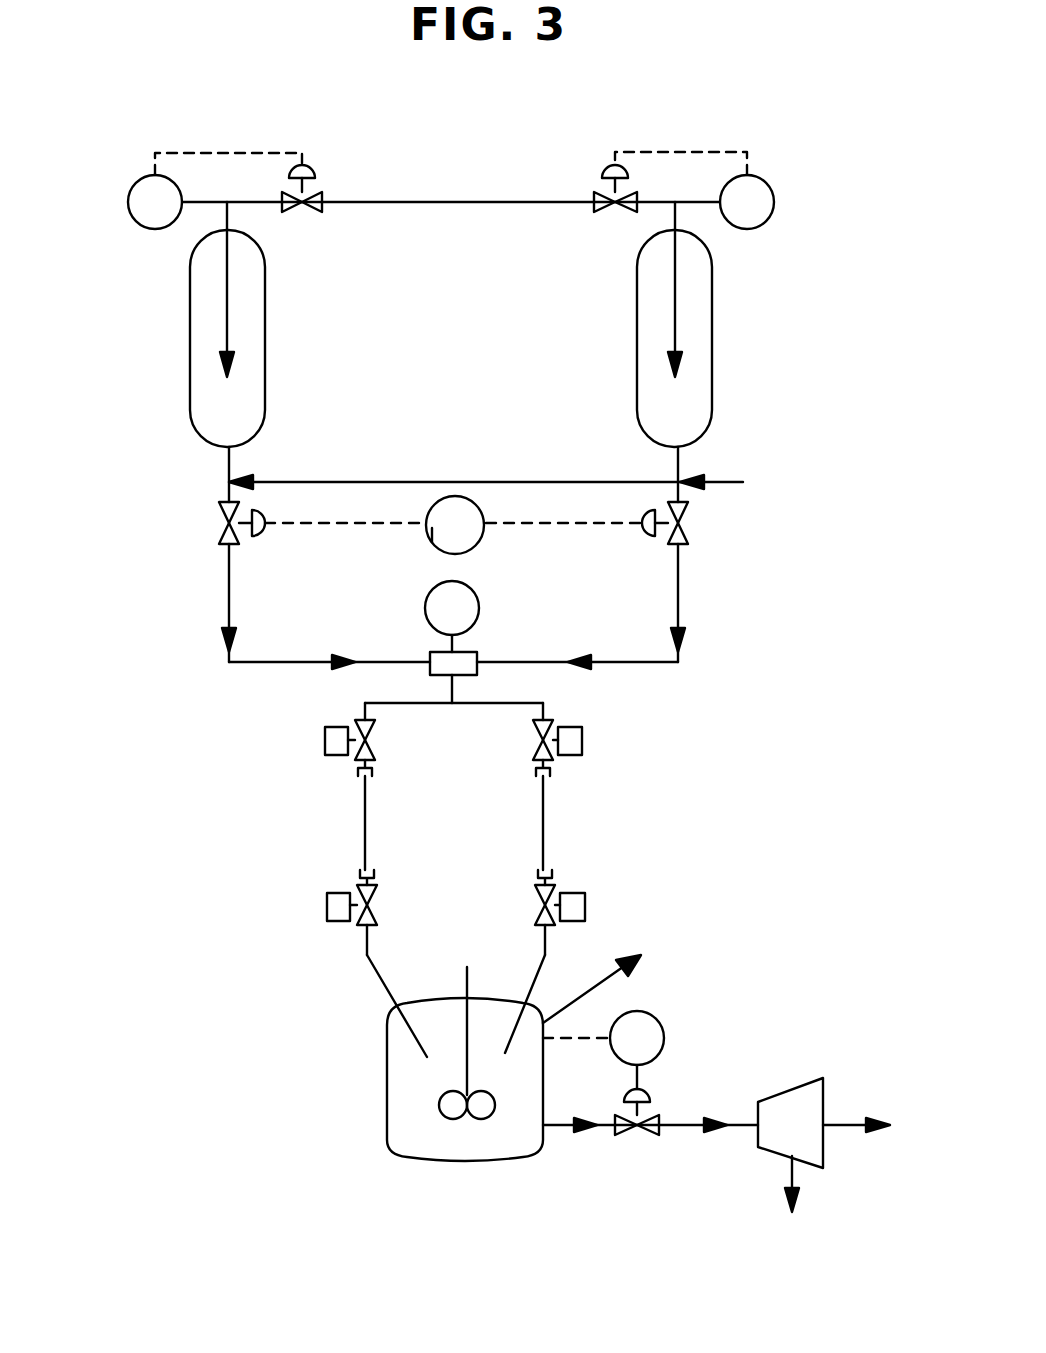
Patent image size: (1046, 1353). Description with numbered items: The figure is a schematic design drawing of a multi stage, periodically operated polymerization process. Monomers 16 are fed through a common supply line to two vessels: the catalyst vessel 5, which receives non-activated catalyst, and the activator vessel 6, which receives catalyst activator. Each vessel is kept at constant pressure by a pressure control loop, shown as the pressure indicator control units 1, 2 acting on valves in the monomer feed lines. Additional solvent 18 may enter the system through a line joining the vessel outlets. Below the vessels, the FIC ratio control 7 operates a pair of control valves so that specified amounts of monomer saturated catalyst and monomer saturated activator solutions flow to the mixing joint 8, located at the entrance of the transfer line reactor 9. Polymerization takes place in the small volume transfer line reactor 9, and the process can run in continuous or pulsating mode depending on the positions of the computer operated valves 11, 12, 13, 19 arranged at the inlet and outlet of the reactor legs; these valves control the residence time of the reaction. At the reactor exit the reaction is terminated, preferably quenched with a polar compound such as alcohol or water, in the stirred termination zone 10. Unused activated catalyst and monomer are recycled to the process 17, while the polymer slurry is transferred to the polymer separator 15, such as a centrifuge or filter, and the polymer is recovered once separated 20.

The pressure indicator control unit 1 is at (128, 198).
The pressure indicator control unit 2 is at (773, 192).
The catalyst vessel 5 is at (265, 372).
The activator vessel 6 is at (636, 340).
The FIC ratio control 7 is at (485, 502).
The mixing joint 8 is at (453, 623).
The transfer line reactor 9 is at (505, 828).
The termination zone 10 is at (387, 1075).
The computer operated valve 11 is at (325, 740).
The computer operated valve 12 is at (582, 740).
The computer operated valve 13 is at (327, 905).
The polymer separator 15 is at (758, 1140).
The monomers 16 is at (452, 220).
The recycle of unused activated catalyst and monomer 17 is at (736, 1043).
The additional solvent 18 is at (507, 485).
The computer operated valve 19 is at (585, 905).
The polymer recovery 20 is at (791, 1207).